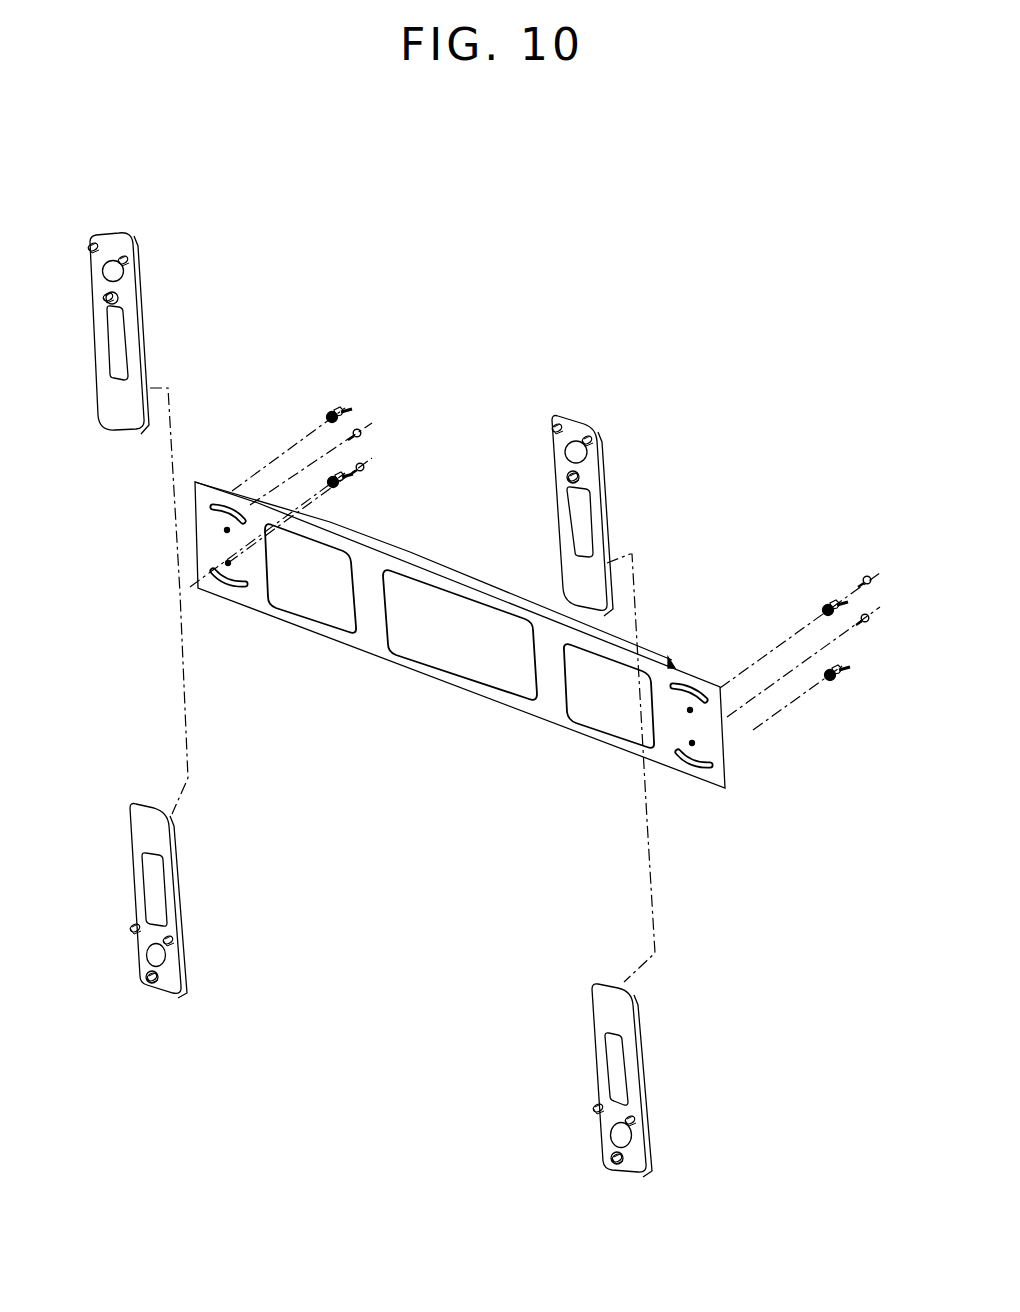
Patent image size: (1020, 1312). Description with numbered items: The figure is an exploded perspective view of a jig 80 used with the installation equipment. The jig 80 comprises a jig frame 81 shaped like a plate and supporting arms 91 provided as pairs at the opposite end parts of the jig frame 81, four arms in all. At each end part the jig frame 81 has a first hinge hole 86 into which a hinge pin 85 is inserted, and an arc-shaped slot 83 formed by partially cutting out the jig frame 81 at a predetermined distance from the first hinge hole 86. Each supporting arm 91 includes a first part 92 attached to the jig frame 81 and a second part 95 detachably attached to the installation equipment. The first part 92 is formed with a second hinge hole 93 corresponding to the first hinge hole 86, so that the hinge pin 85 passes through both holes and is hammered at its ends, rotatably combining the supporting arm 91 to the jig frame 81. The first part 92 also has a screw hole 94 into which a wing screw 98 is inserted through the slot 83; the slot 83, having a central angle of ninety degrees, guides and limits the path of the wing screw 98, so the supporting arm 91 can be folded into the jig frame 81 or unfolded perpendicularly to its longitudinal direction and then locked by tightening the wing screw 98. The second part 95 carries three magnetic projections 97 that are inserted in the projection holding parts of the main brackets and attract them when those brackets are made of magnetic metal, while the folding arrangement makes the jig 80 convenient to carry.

The jig 80 is at (655, 254).
The jig frame 81 is at (422, 686).
The slot 83 is at (214, 503).
The hinge pin 85 is at (363, 464).
The first hinge hole 86 is at (227, 531).
The supporting arm 91 is at (143, 314).
The first part 92 is at (117, 407).
The second hinge hole 93 is at (125, 420).
The screw hole 94 is at (112, 398).
The second part 95 is at (120, 252).
The magnetic projection 97 is at (109, 292).
The wing screw 98 is at (329, 481).